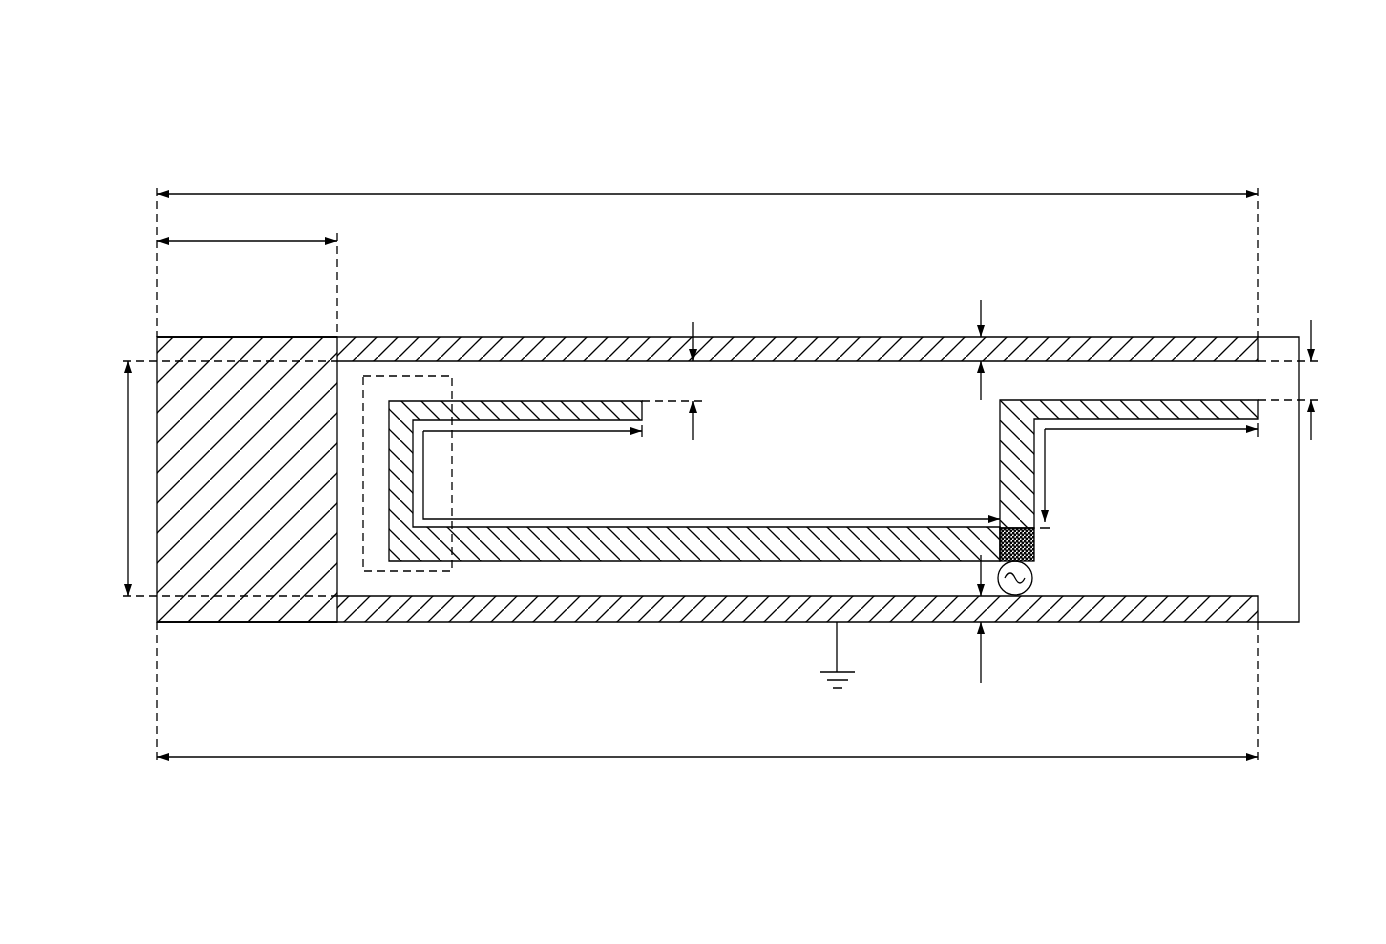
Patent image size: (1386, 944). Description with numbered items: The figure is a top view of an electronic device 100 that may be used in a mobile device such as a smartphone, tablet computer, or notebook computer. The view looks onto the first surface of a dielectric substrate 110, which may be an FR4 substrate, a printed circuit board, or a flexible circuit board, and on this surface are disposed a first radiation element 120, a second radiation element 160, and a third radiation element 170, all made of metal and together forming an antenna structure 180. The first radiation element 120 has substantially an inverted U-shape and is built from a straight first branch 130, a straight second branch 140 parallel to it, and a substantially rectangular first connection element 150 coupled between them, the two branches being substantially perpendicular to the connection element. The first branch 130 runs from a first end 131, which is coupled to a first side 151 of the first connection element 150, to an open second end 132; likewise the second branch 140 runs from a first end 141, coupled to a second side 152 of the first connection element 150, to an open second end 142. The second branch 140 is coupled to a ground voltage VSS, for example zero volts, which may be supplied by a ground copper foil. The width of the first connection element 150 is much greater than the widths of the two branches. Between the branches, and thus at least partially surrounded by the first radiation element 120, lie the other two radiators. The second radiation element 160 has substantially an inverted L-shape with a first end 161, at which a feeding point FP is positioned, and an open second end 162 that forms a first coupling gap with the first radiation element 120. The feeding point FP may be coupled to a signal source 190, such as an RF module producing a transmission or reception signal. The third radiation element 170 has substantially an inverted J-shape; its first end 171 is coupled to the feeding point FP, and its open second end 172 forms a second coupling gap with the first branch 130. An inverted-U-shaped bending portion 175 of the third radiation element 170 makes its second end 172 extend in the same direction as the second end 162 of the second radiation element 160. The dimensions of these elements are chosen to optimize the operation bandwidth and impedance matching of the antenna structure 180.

The electronic device 100 is at (145, 113).
The dielectric substrate 110 is at (1280, 481).
The first radiation element 120 is at (1055, 56).
The first branch 130 is at (762, 352).
The first end of the first branch 131 is at (157, 349).
The second end of the first branch 132 is at (1215, 352).
The second branch 140 is at (724, 612).
The first end of the second branch 141 is at (157, 610).
The second end of the second branch 142 is at (1215, 608).
The first connection element 150 is at (250, 480).
The first side of the first connection element 151 is at (232, 362).
The second side of the first connection element 152 is at (246, 598).
The second radiation element 160 is at (1115, 410).
The first end of the second radiation element 161 is at (1018, 520).
The second end of the second radiation element 162 is at (1245, 412).
The third radiation element 170 is at (628, 550).
The first end of the third radiation element 171 is at (985, 540).
The second end of the third radiation element 172 is at (643, 408).
The inverted-U-shaped bending portion 175 is at (452, 472).
The antenna structure 180 is at (904, 56).
The signal source 190 is at (1033, 578).
The feeding point FP is at (1036, 546).
The ground voltage VSS is at (839, 672).